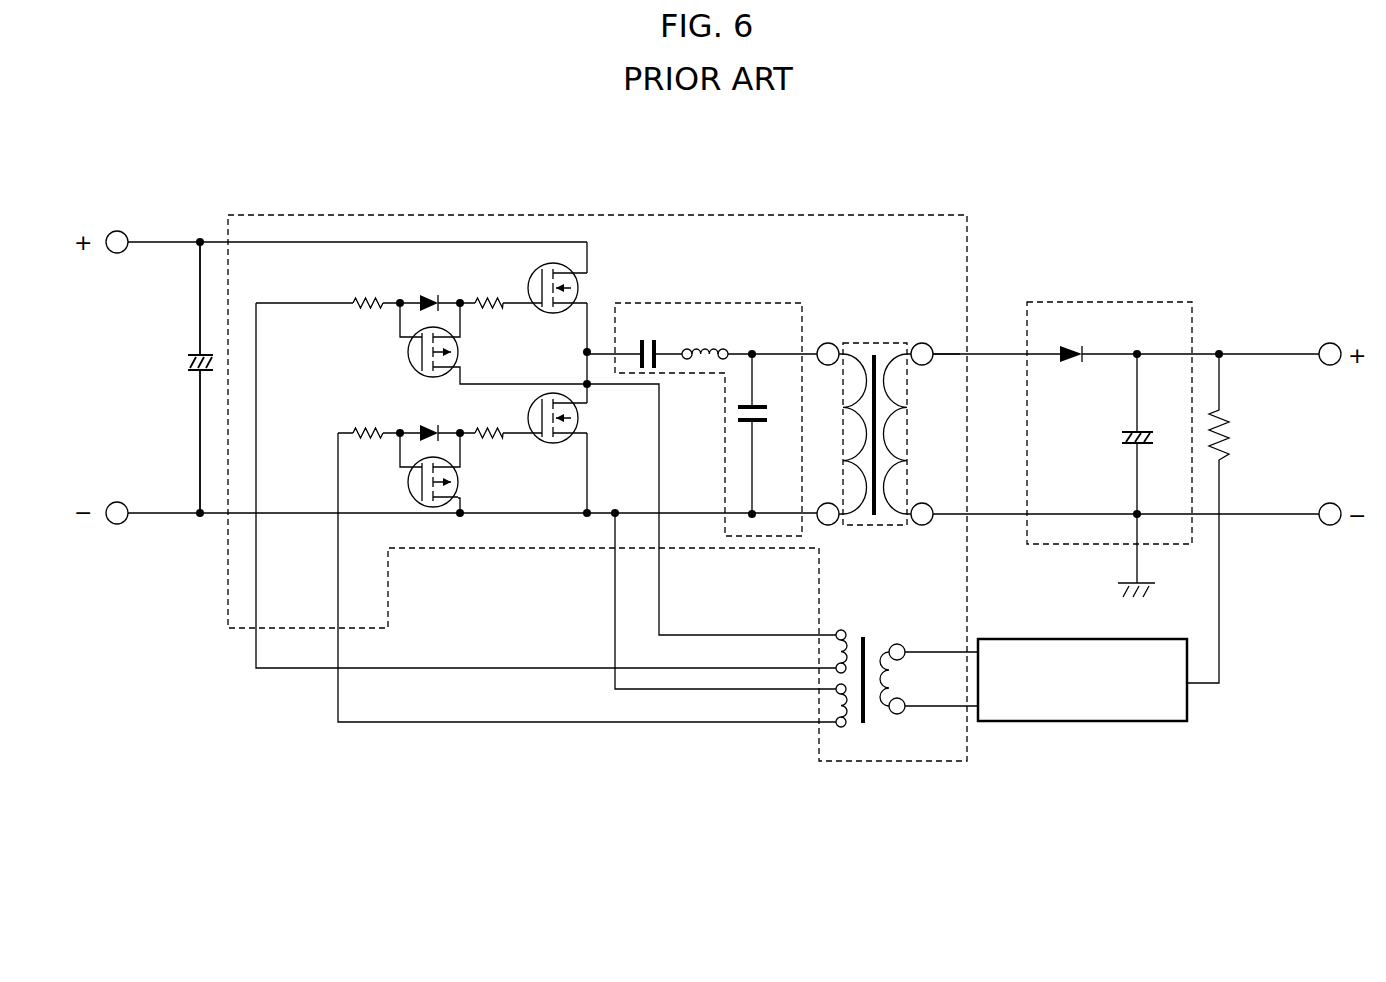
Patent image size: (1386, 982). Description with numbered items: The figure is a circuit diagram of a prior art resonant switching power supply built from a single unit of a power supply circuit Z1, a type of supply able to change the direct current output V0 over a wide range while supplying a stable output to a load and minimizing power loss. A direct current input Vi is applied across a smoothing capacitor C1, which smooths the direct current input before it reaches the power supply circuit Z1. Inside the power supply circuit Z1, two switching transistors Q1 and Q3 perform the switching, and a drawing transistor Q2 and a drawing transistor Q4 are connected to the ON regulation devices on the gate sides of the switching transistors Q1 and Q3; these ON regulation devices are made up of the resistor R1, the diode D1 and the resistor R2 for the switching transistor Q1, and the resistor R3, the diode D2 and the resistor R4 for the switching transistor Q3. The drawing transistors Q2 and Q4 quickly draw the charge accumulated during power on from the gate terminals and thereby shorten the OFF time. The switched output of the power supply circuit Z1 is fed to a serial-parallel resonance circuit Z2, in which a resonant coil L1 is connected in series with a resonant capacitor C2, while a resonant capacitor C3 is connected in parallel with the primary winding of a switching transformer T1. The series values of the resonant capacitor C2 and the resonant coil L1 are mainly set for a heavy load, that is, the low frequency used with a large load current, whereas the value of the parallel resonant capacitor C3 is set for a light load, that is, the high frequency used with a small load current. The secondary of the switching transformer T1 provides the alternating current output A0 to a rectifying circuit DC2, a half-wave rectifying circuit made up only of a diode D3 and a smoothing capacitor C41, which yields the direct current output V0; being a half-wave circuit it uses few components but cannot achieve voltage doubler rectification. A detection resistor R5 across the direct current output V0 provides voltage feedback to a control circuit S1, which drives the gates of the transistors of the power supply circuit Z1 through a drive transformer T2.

The direct current input Vi is at (117, 234).
The smoothing capacitor C1 is at (187, 377).
The power supply circuit Z1 is at (396, 209).
The resistor (ON regulation device) R1 is at (368, 291).
The diode (ON regulation device) D1 is at (429, 293).
The resistor (ON regulation device) R2 is at (489, 291).
The switching transistor Q1 is at (570, 288).
The drawing transistor Q2 is at (450, 352).
The resistor (ON regulation device) R3 is at (368, 421).
The diode (ON regulation device) D2 is at (429, 423).
The resistor (ON regulation device) R4 is at (489, 421).
The switching transistor Q3 is at (571, 418).
The drawing transistor Q4 is at (450, 482).
The serial-parallel resonance circuit Z2 is at (697, 296).
The resonant capacitor C2 is at (646, 342).
The resonant coil L1 is at (705, 337).
The resonant capacitor C3 is at (761, 434).
The switching transformer T1 is at (875, 421).
The alternating current output A0 is at (946, 342).
The rectifying circuit DC2 is at (1132, 293).
The diode D3 is at (1070, 340).
The smoothing capacitor C41 is at (1148, 475).
The detection resistor R5 is at (1225, 518).
The direct current output V0 is at (1330, 346).
The drive transformer T2 is at (862, 654).
The control circuit S1 is at (1045, 722).